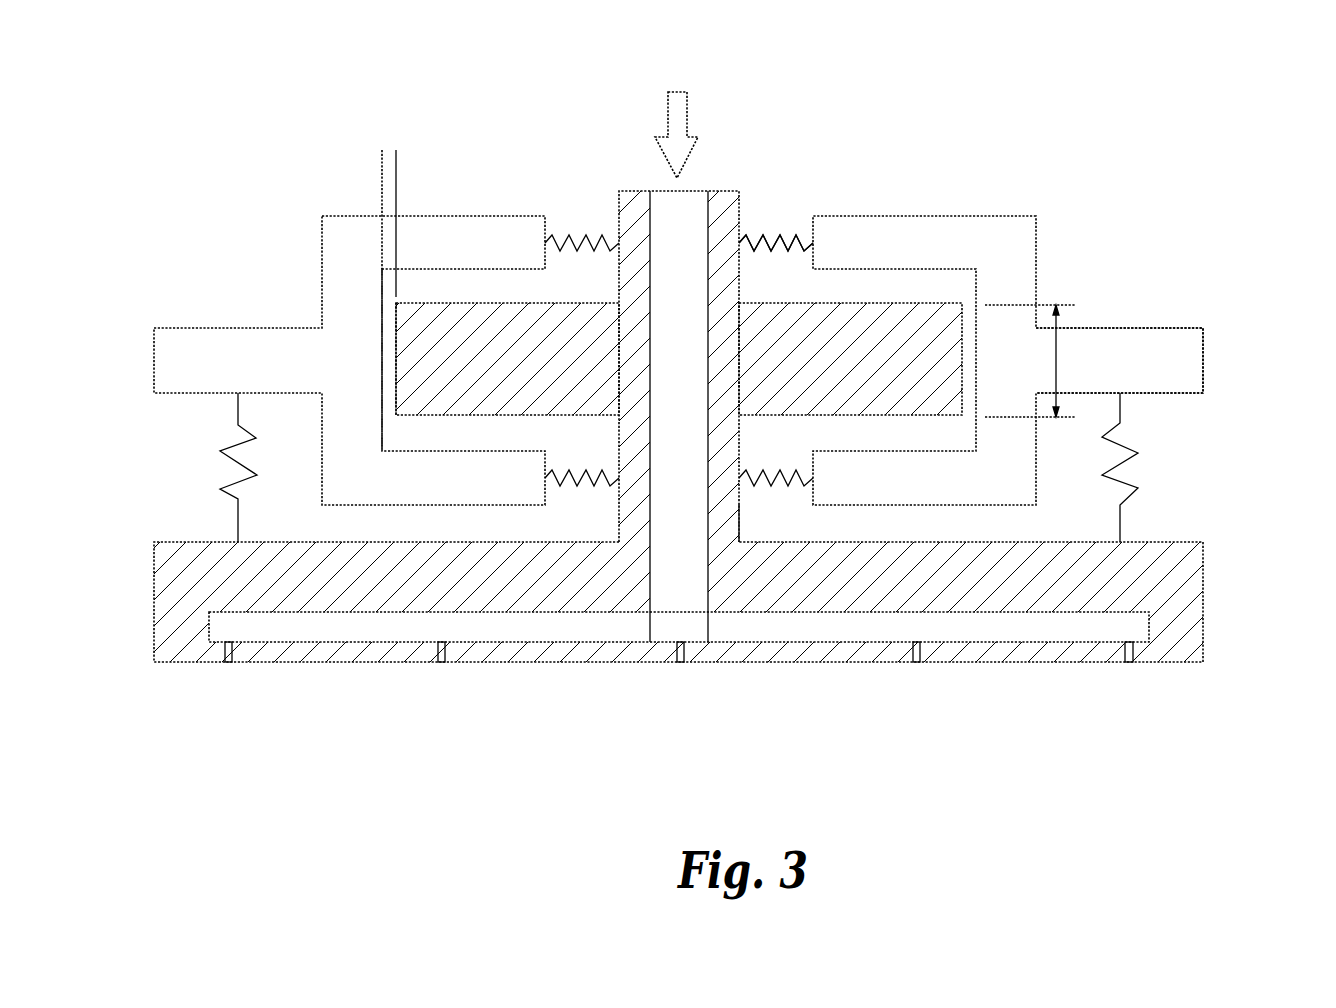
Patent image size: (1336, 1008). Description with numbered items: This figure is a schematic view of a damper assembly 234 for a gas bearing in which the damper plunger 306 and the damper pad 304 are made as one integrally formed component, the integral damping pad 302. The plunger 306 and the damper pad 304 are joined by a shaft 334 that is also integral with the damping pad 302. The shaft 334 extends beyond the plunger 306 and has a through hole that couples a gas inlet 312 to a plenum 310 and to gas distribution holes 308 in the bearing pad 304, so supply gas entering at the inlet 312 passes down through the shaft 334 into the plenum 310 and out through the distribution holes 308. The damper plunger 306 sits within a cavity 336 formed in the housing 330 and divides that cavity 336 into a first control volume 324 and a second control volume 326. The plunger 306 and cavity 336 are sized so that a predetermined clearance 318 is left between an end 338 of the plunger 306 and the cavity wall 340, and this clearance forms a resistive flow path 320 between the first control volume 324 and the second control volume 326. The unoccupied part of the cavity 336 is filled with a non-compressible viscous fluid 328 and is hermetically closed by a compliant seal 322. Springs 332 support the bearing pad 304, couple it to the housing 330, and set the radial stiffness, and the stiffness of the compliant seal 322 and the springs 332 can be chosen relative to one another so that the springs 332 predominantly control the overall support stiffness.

The sensor assembly 234 is at (274, 92).
The integral damping pad 302 is at (616, 188).
The damper pad 304 is at (1190, 615).
The damper plunger 306 is at (937, 315).
The gas distribution holes 308 is at (228, 662).
The plenum 310 is at (219, 632).
The gas inlet 312 is at (678, 113).
The predetermined clearance 318 is at (433, 177).
The resistive flow path 320 is at (1056, 305).
The compliant seal 322 is at (787, 237).
The first control volume 324 is at (582, 296).
The second control volume 326 is at (597, 450).
The viscous fluid 328 is at (792, 448).
The housing 330 is at (1205, 360).
The springs 332 is at (1130, 458).
The shaft 334 is at (739, 517).
The cavity 336 is at (825, 296).
The end of the damper plunger 338 is at (395, 330).
The cavity wall 340 is at (380, 302).